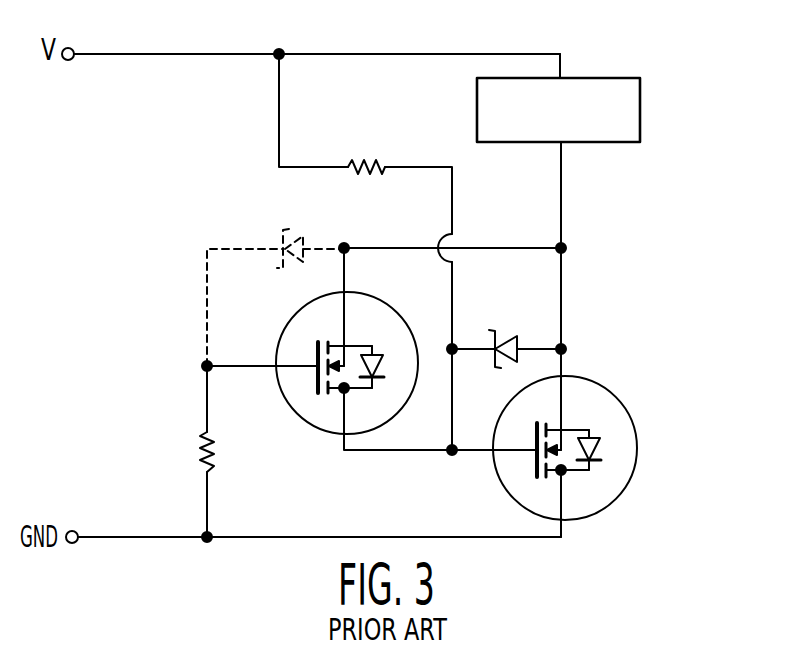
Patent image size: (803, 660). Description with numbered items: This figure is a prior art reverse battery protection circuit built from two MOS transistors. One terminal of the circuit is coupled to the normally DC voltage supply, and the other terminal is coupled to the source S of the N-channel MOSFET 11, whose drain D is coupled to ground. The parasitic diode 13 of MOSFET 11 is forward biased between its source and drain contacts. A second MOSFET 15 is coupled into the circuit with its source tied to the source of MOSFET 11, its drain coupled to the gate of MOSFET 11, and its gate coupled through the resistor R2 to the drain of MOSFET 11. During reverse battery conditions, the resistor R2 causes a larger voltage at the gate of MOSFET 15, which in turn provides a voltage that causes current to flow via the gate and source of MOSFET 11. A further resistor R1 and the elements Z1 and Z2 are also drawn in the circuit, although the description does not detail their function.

The N-channel MOSFET 11 is at (611, 389).
The body diode 13 is at (602, 448).
The second MOSFET 15 is at (387, 298).
The resistor R1 is at (366, 160).
The resistor R2 is at (200, 447).
The zener diode Z1 is at (506, 331).
The zener diode Z2 is at (300, 228).